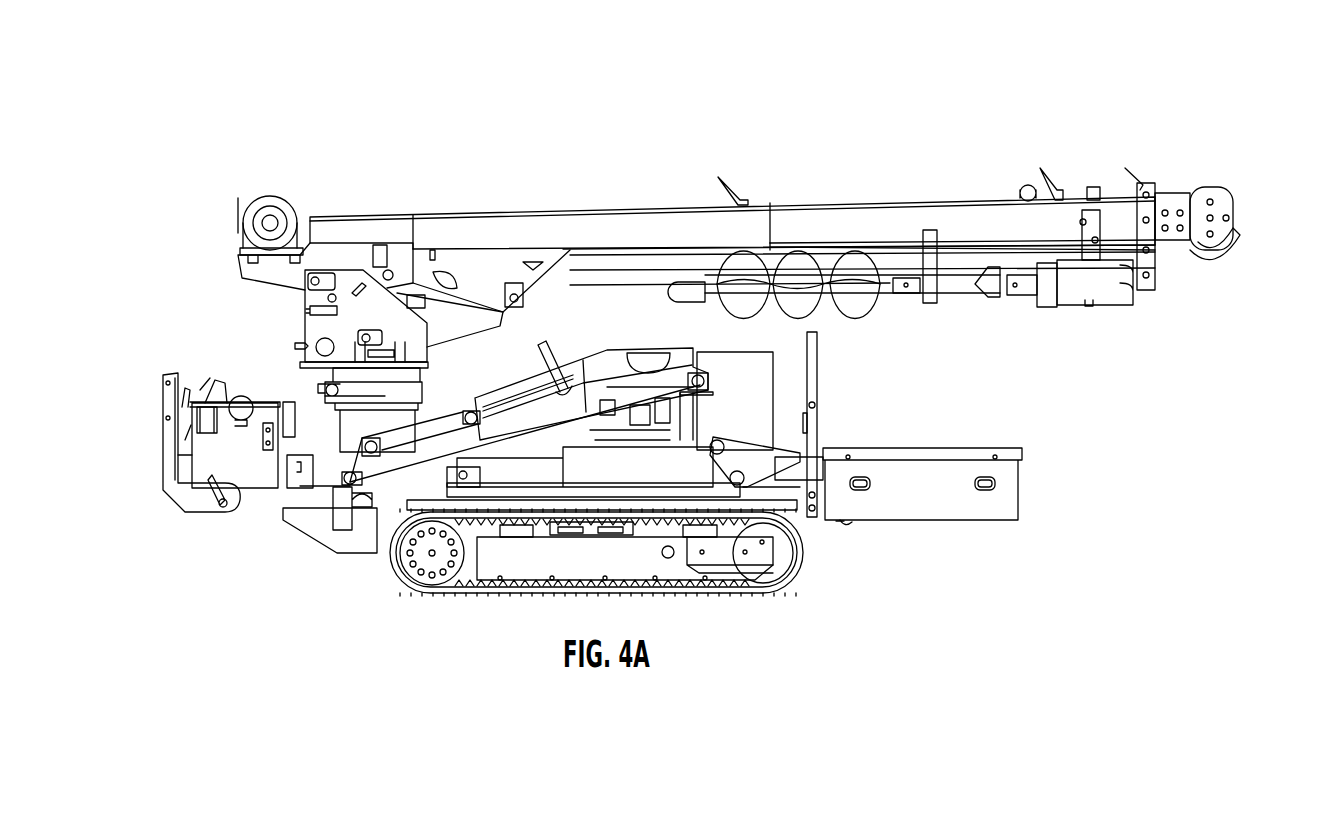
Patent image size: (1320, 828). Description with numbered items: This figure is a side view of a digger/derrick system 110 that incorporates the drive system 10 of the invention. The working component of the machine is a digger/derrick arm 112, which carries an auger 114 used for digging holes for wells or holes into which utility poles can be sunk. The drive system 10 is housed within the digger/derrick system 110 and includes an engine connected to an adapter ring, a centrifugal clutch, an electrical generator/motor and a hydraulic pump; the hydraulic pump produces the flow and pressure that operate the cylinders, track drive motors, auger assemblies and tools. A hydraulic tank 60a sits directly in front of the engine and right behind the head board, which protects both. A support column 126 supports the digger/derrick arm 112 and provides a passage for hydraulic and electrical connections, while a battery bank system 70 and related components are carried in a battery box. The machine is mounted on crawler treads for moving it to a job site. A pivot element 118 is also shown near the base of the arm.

The digger/derrick system 110 is at (937, 109).
The digger/derrick arm 112 is at (580, 210).
The auger 114 is at (797, 262).
The turret pivot 118 is at (448, 325).
The drive system 10 is at (625, 353).
The hydraulic tank 60a is at (750, 395).
The support column 126 is at (343, 450).
The battery bank system 70 is at (1022, 488).